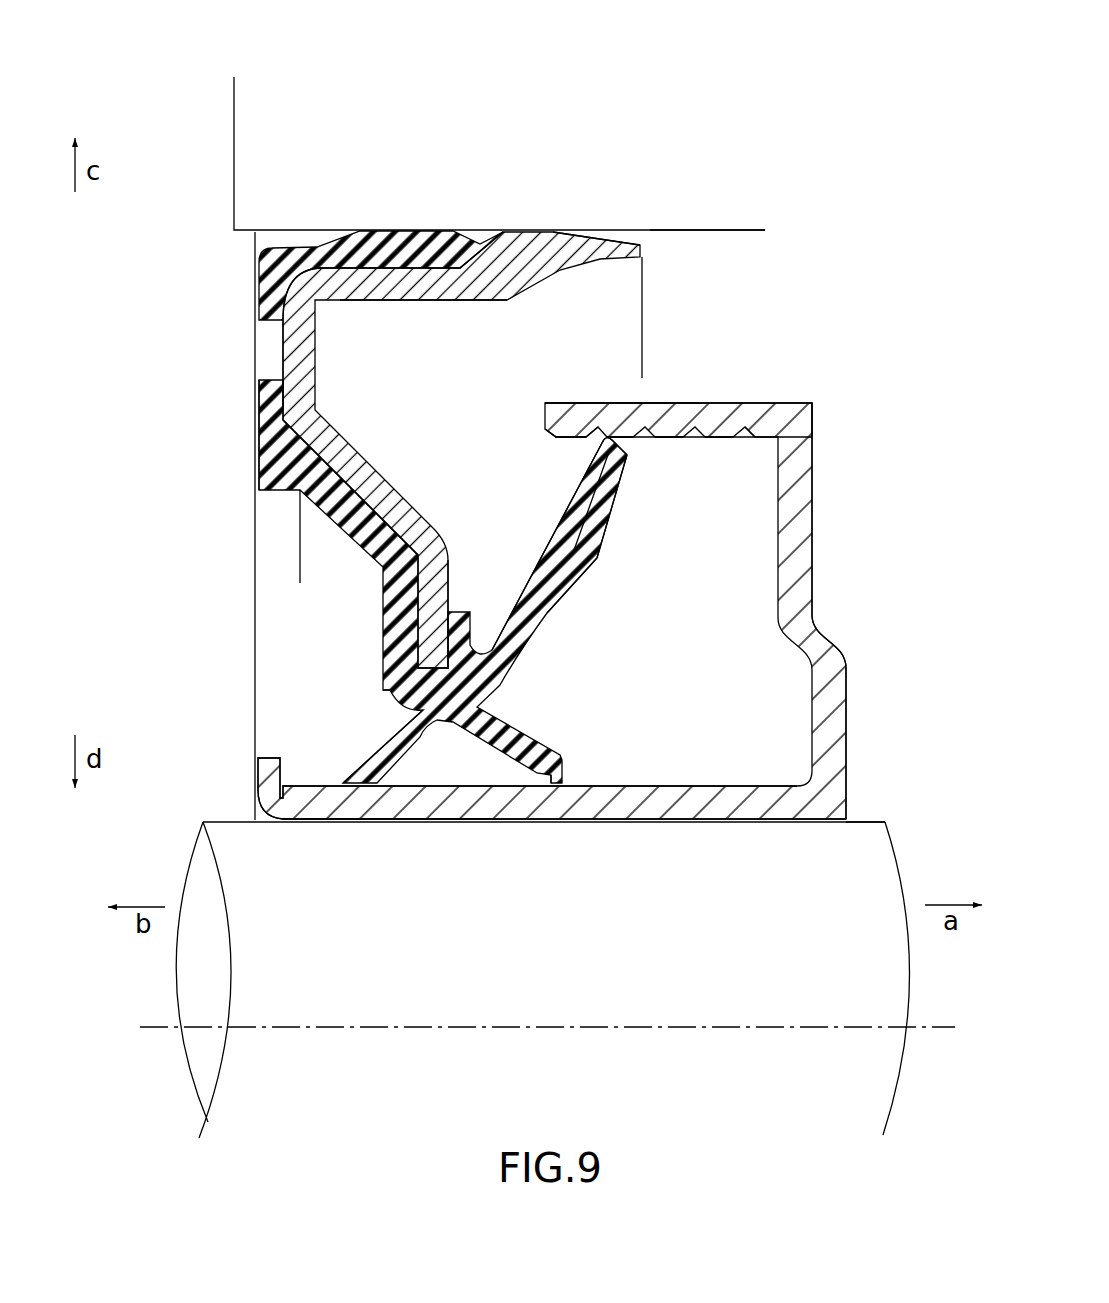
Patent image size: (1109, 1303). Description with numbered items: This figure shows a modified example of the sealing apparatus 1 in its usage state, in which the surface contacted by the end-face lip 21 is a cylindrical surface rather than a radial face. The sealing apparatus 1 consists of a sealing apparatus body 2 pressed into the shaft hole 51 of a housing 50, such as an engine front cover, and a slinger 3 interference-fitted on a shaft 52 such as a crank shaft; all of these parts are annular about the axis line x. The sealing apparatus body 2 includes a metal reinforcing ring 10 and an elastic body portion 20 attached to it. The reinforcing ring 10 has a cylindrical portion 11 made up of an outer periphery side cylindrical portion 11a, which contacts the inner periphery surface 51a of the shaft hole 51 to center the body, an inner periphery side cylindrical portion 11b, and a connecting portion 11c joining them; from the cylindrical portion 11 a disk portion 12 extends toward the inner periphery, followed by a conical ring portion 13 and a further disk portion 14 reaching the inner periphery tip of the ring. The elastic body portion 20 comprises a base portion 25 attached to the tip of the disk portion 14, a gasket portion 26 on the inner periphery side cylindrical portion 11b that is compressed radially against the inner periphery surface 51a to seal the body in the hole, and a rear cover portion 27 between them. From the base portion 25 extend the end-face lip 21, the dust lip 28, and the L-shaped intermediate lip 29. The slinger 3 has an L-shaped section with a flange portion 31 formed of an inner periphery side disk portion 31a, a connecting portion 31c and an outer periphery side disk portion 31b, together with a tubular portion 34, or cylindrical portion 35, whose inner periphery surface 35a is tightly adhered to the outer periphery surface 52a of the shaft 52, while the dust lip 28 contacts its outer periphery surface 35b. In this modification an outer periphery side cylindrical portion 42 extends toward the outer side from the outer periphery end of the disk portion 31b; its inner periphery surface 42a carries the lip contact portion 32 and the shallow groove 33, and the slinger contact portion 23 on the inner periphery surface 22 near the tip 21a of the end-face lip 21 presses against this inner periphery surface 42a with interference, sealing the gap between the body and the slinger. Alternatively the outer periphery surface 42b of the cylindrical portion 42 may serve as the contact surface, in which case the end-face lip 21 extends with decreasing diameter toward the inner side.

The sealing apparatus 1 is at (412, 510).
The sealing apparatus body 2 is at (207, 330).
The slinger 3 is at (609, 628).
The reinforcing ring 10 is at (414, 510).
The cylindrical portion 11 is at (490, 292).
The outer periphery side cylindrical portion 11a is at (565, 235).
The inner periphery side cylindrical portion 11b is at (400, 285).
The connecting portion 11c is at (496, 240).
The disk portion 12 is at (303, 352).
The conical ring portion 13 is at (358, 462).
The disk portion 14 is at (433, 565).
The elastic body portion 20 is at (414, 510).
The end-face lip 21 is at (556, 512).
The tip 21a is at (628, 458).
The inner periphery surface 22 is at (556, 605).
The slinger contact portion 23 is at (605, 436).
The base portion 25 is at (395, 700).
The gasket portion 26 is at (393, 235).
The rear cover portion 27 is at (258, 445).
The dust lip 28 is at (372, 762).
The intermediate lip 29 is at (545, 770).
The flange portion 31 is at (822, 572).
The inner periphery side disk portion 31a is at (830, 714).
The outer periphery side disk portion 31b is at (803, 453).
The connecting portion 31c is at (814, 622).
The lip contact portion 32 is at (598, 465).
The groove 33 is at (700, 440).
The tubular portion 34 is at (628, 816).
The cylindrical portion 35 is at (447, 805).
The inner periphery surface 35a is at (490, 822).
The outer periphery surface 35b is at (423, 800).
The outer periphery side cylindrical portion 42 is at (763, 395).
The inner periphery surface 42a is at (690, 440).
The outer periphery surface 42b is at (670, 402).
The housing 50 is at (736, 98).
The shaft hole 51 is at (720, 300).
The inner periphery surface 51a is at (735, 233).
The shaft 52 is at (902, 862).
The outer periphery surface 52a is at (864, 818).
The axis line x is at (947, 1032).